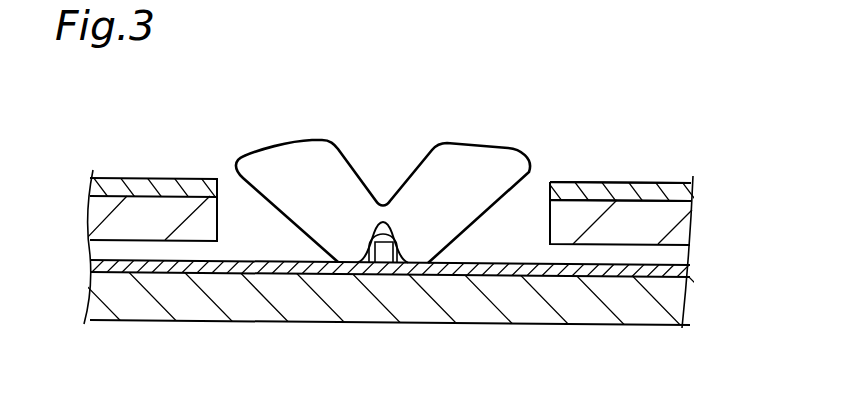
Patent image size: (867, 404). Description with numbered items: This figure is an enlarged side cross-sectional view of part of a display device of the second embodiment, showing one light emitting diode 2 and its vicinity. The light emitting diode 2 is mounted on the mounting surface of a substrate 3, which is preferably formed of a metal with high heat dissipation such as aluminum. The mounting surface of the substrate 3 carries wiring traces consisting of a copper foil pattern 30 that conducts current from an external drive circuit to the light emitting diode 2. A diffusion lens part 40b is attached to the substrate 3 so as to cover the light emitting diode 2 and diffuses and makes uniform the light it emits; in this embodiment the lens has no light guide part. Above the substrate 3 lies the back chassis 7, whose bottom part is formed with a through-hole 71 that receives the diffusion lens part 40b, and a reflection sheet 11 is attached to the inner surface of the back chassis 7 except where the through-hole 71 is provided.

The light emitting diode 2 is at (357, 275).
The substrate 3 is at (480, 317).
The back chassis 7 is at (678, 230).
The reflection sheet 11 is at (613, 190).
The copper foil pattern 30 is at (688, 272).
The diffusion lens part 40b is at (506, 150).
The through-hole 71 is at (218, 203).